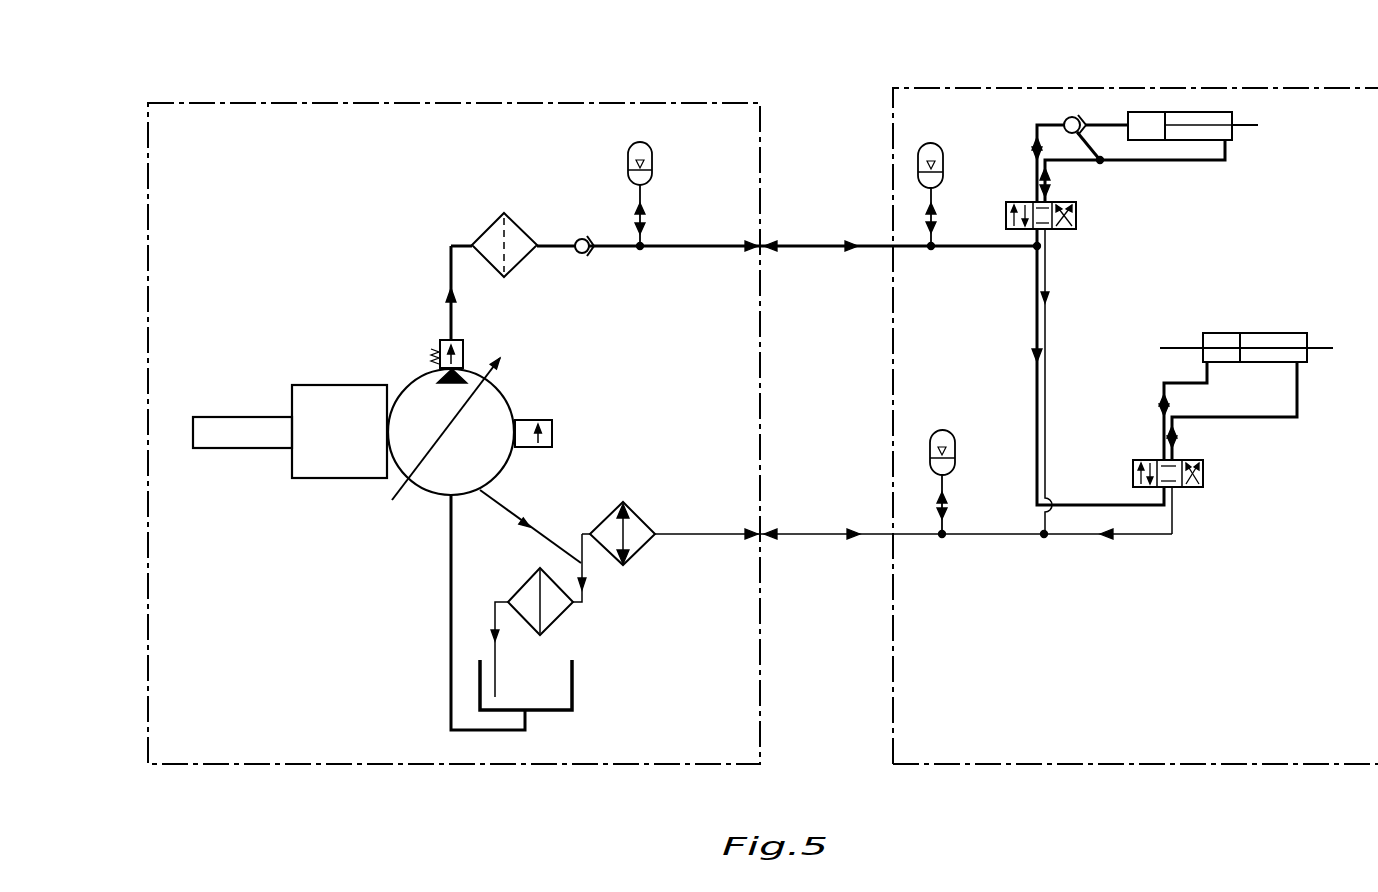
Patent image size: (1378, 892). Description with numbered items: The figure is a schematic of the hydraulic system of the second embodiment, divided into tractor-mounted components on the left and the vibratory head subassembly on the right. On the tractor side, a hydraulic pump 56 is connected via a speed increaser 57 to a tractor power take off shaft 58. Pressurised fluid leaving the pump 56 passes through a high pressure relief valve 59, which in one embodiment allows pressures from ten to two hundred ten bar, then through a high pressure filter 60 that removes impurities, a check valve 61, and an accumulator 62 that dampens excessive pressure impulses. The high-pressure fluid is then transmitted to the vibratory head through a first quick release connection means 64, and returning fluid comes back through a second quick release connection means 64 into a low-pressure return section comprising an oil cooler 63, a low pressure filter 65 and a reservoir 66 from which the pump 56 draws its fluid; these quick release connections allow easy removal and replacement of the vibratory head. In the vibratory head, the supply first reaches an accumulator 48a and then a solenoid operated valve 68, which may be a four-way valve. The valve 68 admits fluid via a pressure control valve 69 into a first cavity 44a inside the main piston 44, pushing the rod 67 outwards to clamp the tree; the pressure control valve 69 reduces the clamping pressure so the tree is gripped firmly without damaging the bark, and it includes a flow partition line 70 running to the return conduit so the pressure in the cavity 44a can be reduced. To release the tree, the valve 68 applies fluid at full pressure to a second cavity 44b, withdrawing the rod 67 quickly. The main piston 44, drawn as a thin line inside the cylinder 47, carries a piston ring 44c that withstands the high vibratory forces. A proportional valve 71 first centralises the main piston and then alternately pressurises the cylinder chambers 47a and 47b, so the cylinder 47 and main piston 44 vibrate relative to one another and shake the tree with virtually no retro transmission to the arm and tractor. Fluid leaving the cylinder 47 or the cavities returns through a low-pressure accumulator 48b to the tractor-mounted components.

The main piston 44 is at (1229, 227).
The first cavity 44a is at (1142, 120).
The second cavity 44b is at (1217, 112).
The piston ring 44c is at (1243, 352).
The cylinder 47 is at (1246, 378).
The cylinder chamber 47a is at (1212, 340).
The cylinder chamber 47b is at (1288, 340).
The accumulator 48a is at (945, 156).
The low-pressure accumulator 48b is at (942, 430).
The hydraulic pump 56 is at (410, 383).
The speed increaser 57 is at (315, 385).
The tractor power take off shaft 58 is at (205, 417).
The high pressure relief valve 59 is at (464, 351).
The high pressure filter 60 is at (480, 232).
The check valve 61 is at (590, 253).
The accumulator 62 is at (655, 158).
The oil cooler 63 is at (642, 512).
The quick release connection means 64 is at (759, 258).
The low pressure filter 65 is at (565, 615).
The reservoir 66 is at (575, 688).
The rod 67 is at (1248, 130).
The solenoid operated valve 68 is at (1077, 218).
The pressure control valve 69 is at (1080, 133).
The flow partition line 70 is at (1088, 147).
The proportional valve 71 is at (1200, 487).